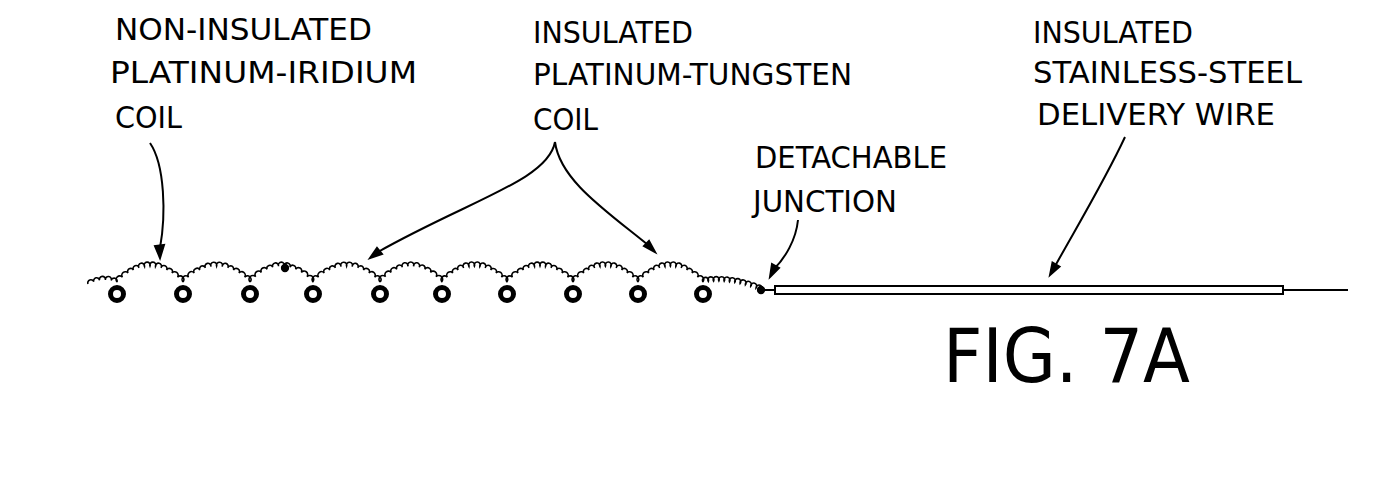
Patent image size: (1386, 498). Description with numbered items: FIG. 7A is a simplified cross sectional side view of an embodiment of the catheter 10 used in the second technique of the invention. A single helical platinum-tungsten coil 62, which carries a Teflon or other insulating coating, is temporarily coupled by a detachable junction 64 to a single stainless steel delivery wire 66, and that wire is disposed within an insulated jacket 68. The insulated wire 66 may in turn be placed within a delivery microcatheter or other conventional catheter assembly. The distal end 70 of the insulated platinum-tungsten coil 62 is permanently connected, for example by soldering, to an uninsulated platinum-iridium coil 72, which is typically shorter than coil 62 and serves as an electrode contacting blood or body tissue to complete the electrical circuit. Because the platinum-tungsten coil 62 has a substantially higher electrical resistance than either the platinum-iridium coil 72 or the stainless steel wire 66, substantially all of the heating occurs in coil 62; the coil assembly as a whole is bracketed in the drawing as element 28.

The catheter 10 is at (1065, 217).
The embolic coil 28 is at (775, 340).
The platinum-tungsten coil 62 is at (710, 302).
The detachable junction 64 is at (764, 293).
The stainless steel delivery wire 66 is at (1308, 263).
The insulated jacket 68 is at (1207, 285).
The distal end 70 is at (285, 267).
The platinum-iridium coil 72 is at (252, 226).